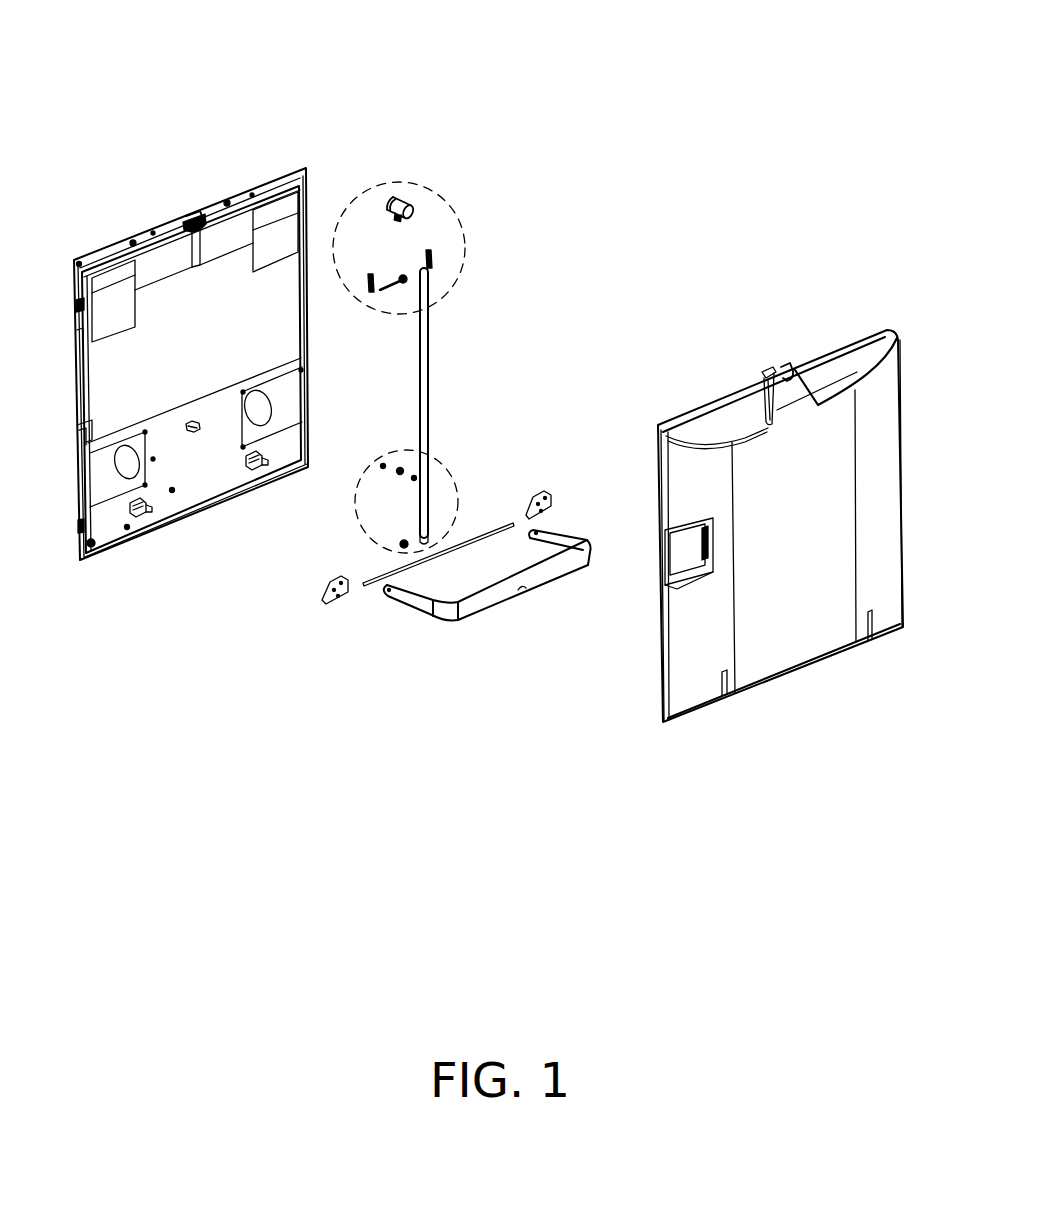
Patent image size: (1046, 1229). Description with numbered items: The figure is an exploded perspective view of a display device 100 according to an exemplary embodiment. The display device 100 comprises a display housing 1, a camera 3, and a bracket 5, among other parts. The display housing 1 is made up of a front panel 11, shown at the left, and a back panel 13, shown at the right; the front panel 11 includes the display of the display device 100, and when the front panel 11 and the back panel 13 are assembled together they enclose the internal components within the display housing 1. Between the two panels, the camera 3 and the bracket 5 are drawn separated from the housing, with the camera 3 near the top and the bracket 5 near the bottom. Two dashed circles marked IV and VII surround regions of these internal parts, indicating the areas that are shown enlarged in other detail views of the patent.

The display device 100 is at (458, 50).
The display housing 1 is at (607, 760).
The front panel 11 is at (177, 542).
The back panel 13 is at (638, 677).
The camera 3 is at (399, 200).
The bracket 5 is at (478, 602).
The detail view IV callout IV is at (457, 215).
The detail view VII callout VII is at (445, 468).